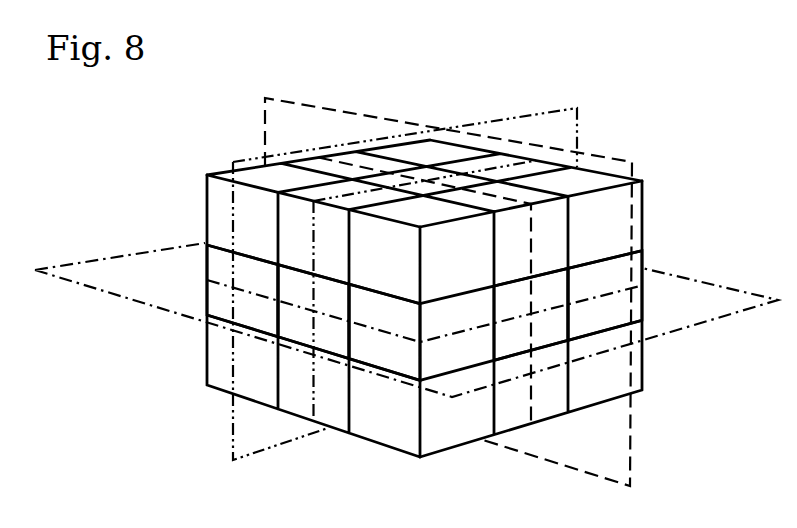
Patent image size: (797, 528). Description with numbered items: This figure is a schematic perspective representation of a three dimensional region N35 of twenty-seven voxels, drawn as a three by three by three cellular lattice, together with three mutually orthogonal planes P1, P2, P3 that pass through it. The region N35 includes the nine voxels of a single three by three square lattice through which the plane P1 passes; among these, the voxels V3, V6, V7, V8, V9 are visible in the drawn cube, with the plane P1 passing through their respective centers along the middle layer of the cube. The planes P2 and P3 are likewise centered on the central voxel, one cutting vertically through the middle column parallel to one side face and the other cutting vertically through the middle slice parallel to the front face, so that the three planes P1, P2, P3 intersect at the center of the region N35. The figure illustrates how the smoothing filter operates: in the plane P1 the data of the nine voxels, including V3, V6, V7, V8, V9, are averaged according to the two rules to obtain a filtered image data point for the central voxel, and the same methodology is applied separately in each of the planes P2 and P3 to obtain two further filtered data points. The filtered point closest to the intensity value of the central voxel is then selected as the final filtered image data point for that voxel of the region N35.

The three dimensional region N35 is at (686, 118).
The plane P1 is at (713, 285).
The plane P2 is at (582, 139).
The plane P3 is at (263, 108).
The voxel V3 is at (603, 307).
The voxel V6 is at (540, 325).
The voxel V7 is at (222, 260).
The voxel V8 is at (298, 322).
The voxel V9 is at (383, 350).